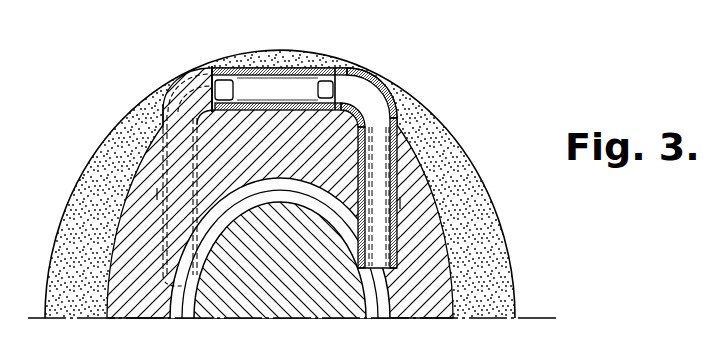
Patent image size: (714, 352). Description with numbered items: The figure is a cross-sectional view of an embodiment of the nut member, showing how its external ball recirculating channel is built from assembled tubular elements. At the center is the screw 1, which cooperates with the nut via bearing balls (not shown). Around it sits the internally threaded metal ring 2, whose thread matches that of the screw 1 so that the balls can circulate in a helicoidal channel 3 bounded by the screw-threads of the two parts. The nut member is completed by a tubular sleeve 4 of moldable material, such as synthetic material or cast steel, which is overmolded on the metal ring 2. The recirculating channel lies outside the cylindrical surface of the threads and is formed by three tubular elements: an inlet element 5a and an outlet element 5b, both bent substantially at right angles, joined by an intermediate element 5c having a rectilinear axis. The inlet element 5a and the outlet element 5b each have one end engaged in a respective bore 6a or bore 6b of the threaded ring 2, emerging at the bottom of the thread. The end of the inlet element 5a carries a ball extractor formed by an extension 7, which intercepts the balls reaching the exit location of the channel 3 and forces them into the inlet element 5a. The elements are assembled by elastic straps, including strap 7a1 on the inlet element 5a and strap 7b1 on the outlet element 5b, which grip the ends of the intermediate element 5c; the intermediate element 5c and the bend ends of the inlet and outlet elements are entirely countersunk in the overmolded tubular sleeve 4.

The screw 1 is at (238, 306).
The metal ring 2 is at (135, 312).
The helicoidal channel 3 is at (182, 313).
The tubular sleeve 4 is at (505, 268).
The inlet element 5a is at (163, 112).
The outlet element 5b is at (393, 118).
The intermediate element 5c is at (240, 68).
The bore 6a is at (155, 194).
The bore 6b is at (400, 203).
The extension 7 is at (178, 286).
The elastic strap 7a1 is at (188, 76).
The elastic strap 7b1 is at (355, 72).